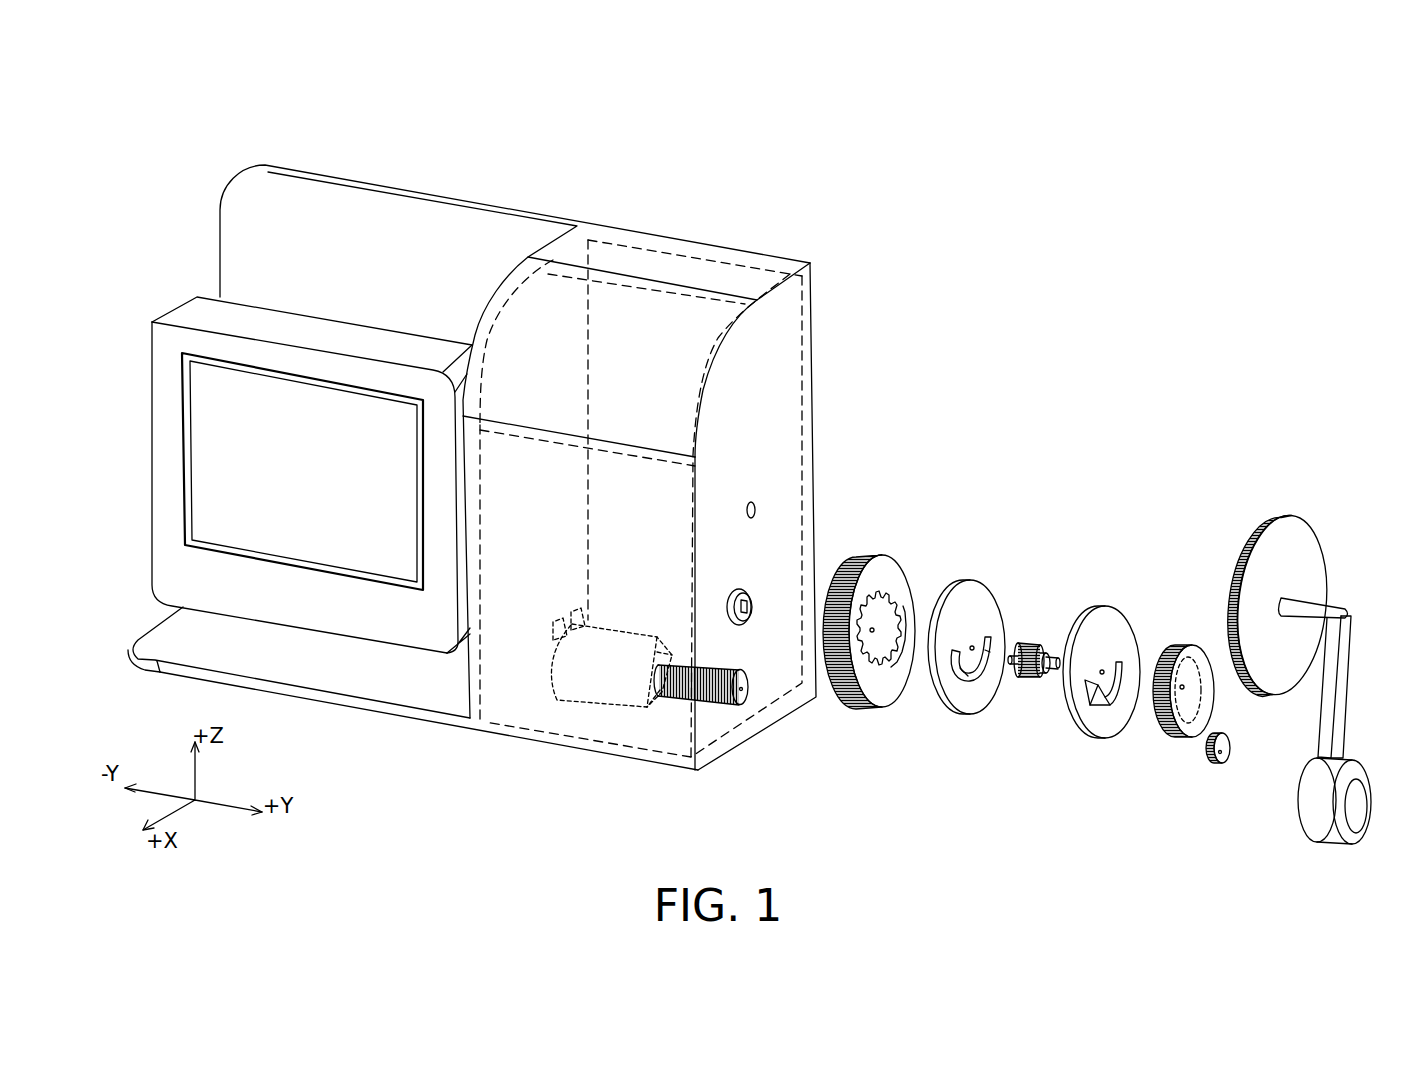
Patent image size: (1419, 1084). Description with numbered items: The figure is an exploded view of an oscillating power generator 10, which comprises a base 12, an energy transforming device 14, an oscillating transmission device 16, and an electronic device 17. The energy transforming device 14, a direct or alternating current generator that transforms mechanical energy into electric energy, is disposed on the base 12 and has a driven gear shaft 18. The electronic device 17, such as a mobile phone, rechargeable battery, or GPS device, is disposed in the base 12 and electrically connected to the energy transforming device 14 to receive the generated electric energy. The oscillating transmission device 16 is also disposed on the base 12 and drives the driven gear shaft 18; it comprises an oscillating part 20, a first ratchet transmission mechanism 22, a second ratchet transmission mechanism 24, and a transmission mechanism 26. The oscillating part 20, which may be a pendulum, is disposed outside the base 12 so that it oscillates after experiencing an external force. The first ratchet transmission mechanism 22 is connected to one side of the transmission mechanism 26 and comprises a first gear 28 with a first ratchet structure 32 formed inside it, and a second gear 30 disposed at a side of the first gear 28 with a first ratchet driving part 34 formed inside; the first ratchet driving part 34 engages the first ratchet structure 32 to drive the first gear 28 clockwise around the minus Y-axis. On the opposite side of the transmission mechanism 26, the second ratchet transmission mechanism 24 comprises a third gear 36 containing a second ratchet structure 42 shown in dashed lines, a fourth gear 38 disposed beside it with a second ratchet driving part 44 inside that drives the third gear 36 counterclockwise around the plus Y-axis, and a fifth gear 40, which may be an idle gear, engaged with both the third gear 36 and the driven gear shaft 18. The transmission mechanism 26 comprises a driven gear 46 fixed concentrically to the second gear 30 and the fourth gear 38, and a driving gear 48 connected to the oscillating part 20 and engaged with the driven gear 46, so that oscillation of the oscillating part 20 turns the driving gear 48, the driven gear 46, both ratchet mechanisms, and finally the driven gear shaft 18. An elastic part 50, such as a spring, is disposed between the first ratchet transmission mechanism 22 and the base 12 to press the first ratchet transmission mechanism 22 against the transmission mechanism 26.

The oscillating power generator 10 is at (935, 145).
The base 12 is at (465, 223).
The energy transforming device 14 is at (592, 692).
The oscillating transmission device 16 is at (1227, 296).
The electronic device 17 is at (257, 322).
The driven gear shaft 18 is at (680, 692).
The oscillating part 20 is at (1350, 608).
The first ratchet transmission mechanism 22 is at (989, 506).
The second ratchet transmission mechanism 24 is at (1195, 836).
The transmission mechanism 26 is at (1238, 405).
The first gear 28 is at (905, 593).
The second gear 30 is at (986, 593).
The first ratchet structure 32 is at (870, 660).
The first ratchet driving part 34 is at (963, 677).
The third gear 36 is at (1183, 737).
The fourth gear 38 is at (1095, 727).
The fifth gear 40 is at (1217, 763).
The second ratchet structure 42 is at (1197, 703).
The second ratchet driving part 44 is at (1083, 698).
The driven gear 46 is at (1047, 643).
The driving gear 48 is at (1265, 553).
The elastic part 50 is at (743, 625).